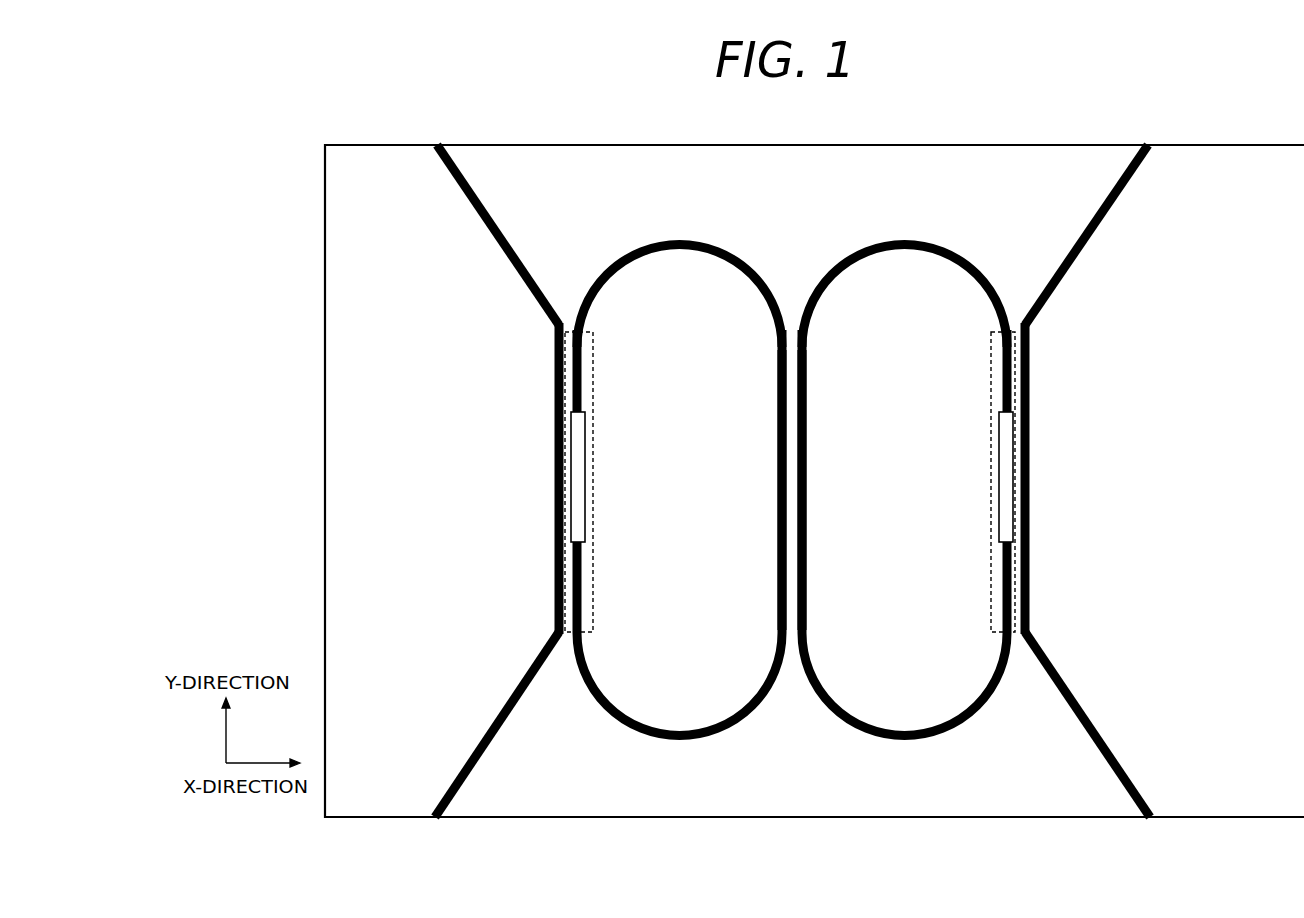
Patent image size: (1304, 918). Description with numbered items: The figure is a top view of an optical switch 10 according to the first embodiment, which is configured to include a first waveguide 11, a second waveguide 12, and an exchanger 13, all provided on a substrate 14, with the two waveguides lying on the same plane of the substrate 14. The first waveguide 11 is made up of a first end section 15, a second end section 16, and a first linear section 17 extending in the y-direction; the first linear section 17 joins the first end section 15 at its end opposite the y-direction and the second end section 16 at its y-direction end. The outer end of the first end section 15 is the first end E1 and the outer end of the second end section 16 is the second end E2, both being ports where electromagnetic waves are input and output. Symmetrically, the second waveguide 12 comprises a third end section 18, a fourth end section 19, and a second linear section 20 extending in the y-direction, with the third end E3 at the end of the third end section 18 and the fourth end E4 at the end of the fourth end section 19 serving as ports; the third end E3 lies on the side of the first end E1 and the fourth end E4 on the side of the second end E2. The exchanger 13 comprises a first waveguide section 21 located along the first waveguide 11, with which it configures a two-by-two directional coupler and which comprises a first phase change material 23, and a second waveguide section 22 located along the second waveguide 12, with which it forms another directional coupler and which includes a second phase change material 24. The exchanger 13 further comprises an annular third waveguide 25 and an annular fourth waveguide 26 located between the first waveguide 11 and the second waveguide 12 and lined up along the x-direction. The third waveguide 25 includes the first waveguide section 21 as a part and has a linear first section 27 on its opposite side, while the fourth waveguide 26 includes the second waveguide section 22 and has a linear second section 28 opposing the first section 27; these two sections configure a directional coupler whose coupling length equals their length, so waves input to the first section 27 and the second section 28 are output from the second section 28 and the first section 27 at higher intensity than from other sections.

The optical switch 10 is at (334, 838).
The first waveguide 11 is at (472, 481).
The second waveguide 12 is at (1112, 481).
The exchanger 13 is at (792, 570).
The substrate 14 is at (388, 199).
The first end section 15 is at (539, 662).
The second end section 16 is at (511, 263).
The first linear section 17 is at (555, 460).
The third end section 18 is at (1048, 667).
The fourth end section 19 is at (1078, 254).
The second linear section 20 is at (1030, 460).
The first waveguide section 21 is at (594, 569).
The second waveguide section 22 is at (990, 565).
The first phase change material 23 is at (577, 475).
The second phase change material 24 is at (999, 470).
The third waveguide 25 is at (702, 744).
The fourth waveguide 26 is at (895, 744).
The first section 27 is at (777, 452).
The second section 28 is at (807, 452).
The first end E1 is at (435, 819).
The second end E2 is at (436, 144).
The third end E3 is at (1150, 819).
The fourth end E4 is at (1149, 144).